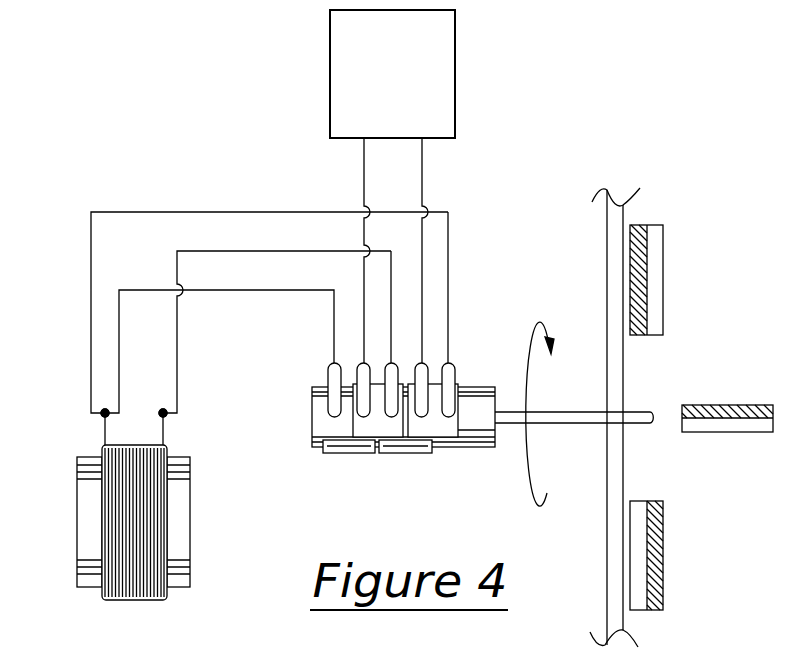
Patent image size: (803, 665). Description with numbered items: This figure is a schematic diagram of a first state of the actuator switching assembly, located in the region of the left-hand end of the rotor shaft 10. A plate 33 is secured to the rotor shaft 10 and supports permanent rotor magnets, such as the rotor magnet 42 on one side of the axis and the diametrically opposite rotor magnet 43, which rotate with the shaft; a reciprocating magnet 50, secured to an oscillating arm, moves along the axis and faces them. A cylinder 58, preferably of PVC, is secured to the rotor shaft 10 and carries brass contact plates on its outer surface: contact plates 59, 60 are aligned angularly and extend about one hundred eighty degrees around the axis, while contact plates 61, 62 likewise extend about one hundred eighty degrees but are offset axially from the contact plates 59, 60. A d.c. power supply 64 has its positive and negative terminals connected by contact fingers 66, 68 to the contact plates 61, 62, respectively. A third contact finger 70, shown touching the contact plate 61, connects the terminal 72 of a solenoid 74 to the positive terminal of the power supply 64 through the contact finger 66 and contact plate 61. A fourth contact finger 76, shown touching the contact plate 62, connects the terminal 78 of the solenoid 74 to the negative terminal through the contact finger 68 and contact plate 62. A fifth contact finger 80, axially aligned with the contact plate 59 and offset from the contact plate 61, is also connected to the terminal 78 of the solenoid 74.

The rotor shaft 10 is at (541, 425).
The plate 33 is at (614, 384).
The rotor magnet 42 is at (664, 283).
The rotor magnet 43 is at (664, 558).
The reciprocating magnet 50 is at (730, 404).
The cylinder 58 is at (465, 448).
The contact plate 59 is at (353, 455).
The contact plate 60 is at (401, 453).
The contact plate 61 is at (353, 420).
The contact plate 62 is at (445, 432).
The d.c. power supply 64 is at (337, 137).
The contact finger 66 is at (363, 363).
The contact finger 68 is at (421, 363).
The third contact finger 70 is at (393, 363).
The terminal 72 is at (166, 416).
The solenoid 74 is at (192, 522).
The fourth contact finger 76 is at (450, 364).
The terminal 78 is at (103, 416).
The fifth contact finger 80 is at (330, 370).